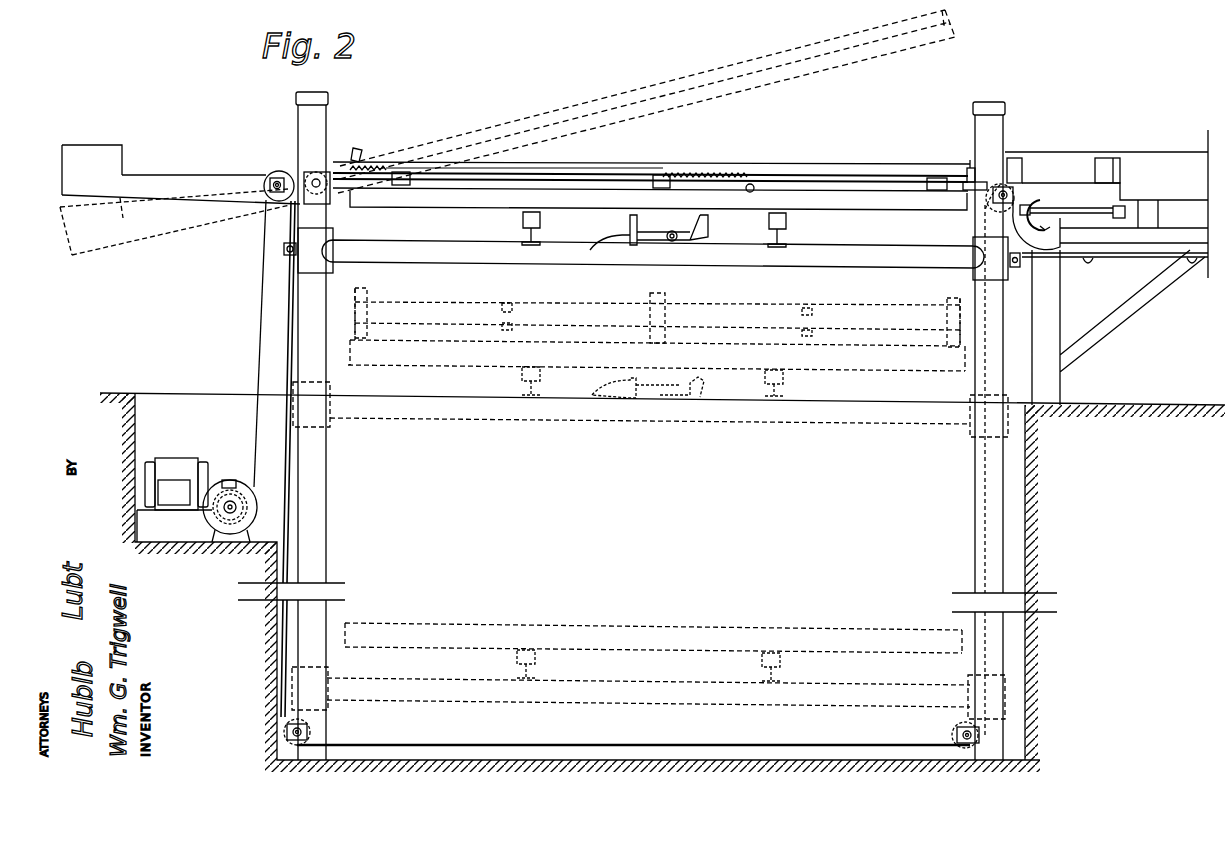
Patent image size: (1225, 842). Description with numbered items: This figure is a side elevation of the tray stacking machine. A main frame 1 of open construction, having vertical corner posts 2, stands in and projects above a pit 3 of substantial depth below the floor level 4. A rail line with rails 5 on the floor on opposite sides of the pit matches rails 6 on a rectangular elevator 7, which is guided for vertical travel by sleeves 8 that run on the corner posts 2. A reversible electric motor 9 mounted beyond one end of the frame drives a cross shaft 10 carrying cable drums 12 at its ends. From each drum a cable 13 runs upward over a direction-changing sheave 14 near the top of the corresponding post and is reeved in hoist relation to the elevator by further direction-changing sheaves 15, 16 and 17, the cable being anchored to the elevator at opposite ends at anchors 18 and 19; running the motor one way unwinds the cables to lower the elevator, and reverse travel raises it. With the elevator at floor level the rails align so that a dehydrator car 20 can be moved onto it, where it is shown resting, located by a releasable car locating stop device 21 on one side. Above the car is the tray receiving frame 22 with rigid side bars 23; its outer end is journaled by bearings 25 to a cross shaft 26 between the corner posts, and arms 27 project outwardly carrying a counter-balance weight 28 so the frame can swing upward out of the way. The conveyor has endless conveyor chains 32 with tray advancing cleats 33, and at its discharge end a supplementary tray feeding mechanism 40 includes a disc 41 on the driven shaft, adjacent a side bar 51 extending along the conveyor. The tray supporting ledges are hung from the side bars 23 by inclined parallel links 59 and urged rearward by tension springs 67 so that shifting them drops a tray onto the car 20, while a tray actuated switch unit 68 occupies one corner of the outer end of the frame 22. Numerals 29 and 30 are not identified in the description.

The main frame 1 is at (338, 509).
The vertical corner posts 2 is at (316, 478).
The pit 3 is at (948, 520).
The floor level 4 is at (1112, 405).
The rails 5 is at (770, 397).
The rails 6 is at (520, 224).
The elevator 7 is at (404, 246).
The sleeves 8 is at (328, 240).
The reversible electric motor 9 is at (166, 470).
The cross shaft 10 is at (226, 512).
The cable drums 12 is at (222, 508).
The cable 13 is at (254, 332).
The direction-changing sheave 14 is at (272, 172).
The direction-changing sheave 15 is at (284, 730).
The direction-changing sheave 16 is at (954, 735).
The direction-changing sheave 17 is at (1018, 190).
The cable anchor 18 is at (283, 250).
The cable anchor 19 is at (1012, 270).
The dehydrator car 20 is at (582, 205).
The car locating stop device 21 is at (712, 229).
The tray receiving frame 22 is at (825, 156).
The side bars 23 is at (864, 176).
The bearings 25 is at (310, 178).
The cross shaft 26 is at (325, 152).
The arms 27 is at (158, 180).
The counter-balance weight 28 is at (86, 156).
The stop block 29 is at (972, 182).
The stop post 30 is at (968, 178).
The endless conveyor chains 32 is at (1116, 258).
The tray advancing cleats 33 is at (1086, 262).
The supplementary tray feeding mechanism 40 is at (1077, 219).
The disc 41 is at (1058, 236).
The side bar 51 is at (1072, 153).
The parallel links 59 is at (664, 172).
The tension springs 67 is at (712, 172).
The tray actuated switch unit 68 is at (356, 148).